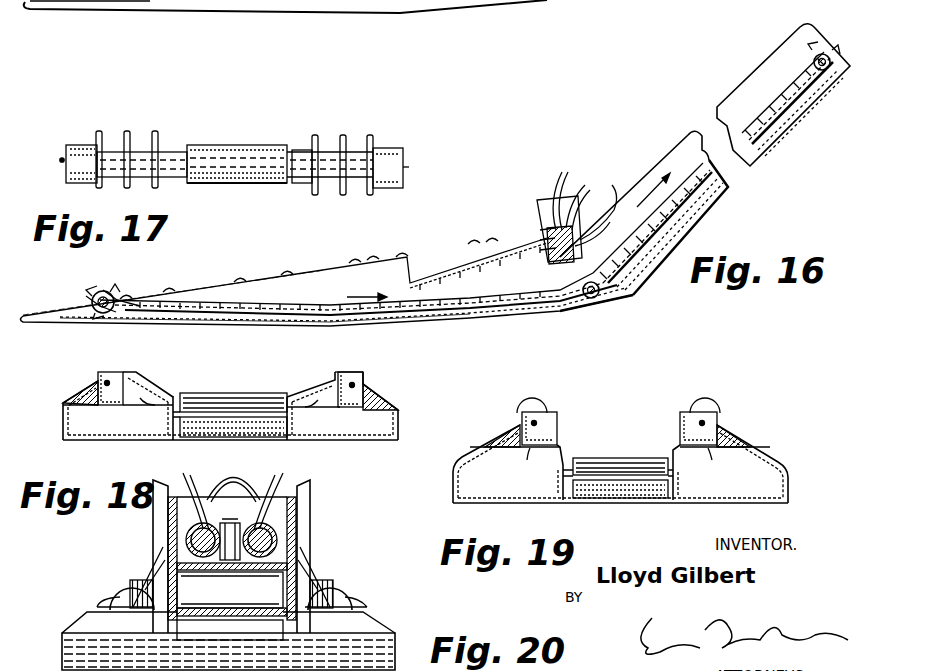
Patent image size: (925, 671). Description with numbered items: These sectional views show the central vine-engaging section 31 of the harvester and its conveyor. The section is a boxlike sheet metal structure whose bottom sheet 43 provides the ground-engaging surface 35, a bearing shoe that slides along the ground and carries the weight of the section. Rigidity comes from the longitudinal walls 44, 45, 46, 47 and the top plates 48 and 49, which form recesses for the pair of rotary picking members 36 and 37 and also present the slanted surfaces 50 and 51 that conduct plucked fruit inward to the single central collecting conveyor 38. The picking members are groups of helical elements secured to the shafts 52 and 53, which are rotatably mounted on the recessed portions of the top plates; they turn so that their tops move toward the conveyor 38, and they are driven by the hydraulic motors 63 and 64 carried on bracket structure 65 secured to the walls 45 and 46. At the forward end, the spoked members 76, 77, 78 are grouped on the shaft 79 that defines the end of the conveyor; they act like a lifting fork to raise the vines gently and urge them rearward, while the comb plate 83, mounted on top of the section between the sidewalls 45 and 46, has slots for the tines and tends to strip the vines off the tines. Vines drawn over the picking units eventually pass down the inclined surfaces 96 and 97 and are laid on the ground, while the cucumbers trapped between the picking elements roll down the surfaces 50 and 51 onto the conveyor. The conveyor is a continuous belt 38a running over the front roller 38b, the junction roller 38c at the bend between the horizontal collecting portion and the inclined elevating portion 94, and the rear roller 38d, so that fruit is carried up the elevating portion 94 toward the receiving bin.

In FIG. 16, the central section 31 is at (566, 312).
In FIG. 16, the ground-engaging surface 35 is at (285, 328).
In FIG. 18, the rotary picking member 36 is at (362, 371).
In FIG. 19, the rotary picking member 36 is at (719, 407).
In FIG. 20, the rotary picking member 36 is at (330, 586).
In FIG. 18, the rotary picking member 37 is at (123, 368).
In FIG. 19, the rotary picking member 37 is at (523, 410).
In FIG. 20, the rotary picking member 37 is at (120, 584).
In FIG. 16, the central collecting conveyor 38 is at (238, 295).
In FIG. 17, the central collecting conveyor 38 is at (244, 146).
In FIG. 18, the central collecting conveyor 38 is at (229, 395).
In FIG. 19, the central collecting conveyor 38 is at (620, 458).
In FIG. 20, the central collecting conveyor 38 is at (206, 574).
In FIG. 16, the continuous belt 38a is at (453, 300).
In FIG. 16, the front roller 38b is at (104, 291).
In FIG. 16, the junction roller 38c is at (605, 296).
In FIG. 16, the rear roller 38d is at (822, 54).
In FIG. 16, the bottom sheet 43 is at (418, 325).
In FIG. 17, the bottom sheet 43 is at (258, 188).
In FIG. 18, the bottom sheet 43 is at (325, 443).
In FIG. 19, the bottom sheet 43 is at (630, 505).
In FIG. 18, the longitudinal wall 44 is at (392, 428).
In FIG. 19, the longitudinal wall 44 is at (788, 487).
In FIG. 16, the longitudinal wall 45 is at (325, 270).
In FIG. 18, the longitudinal wall 45 is at (287, 428).
In FIG. 19, the longitudinal wall 45 is at (675, 487).
In FIG. 20, the longitudinal wall 45 is at (293, 545).
In FIG. 18, the longitudinal wall 46 is at (178, 428).
In FIG. 19, the longitudinal wall 46 is at (558, 487).
In FIG. 20, the longitudinal wall 46 is at (170, 552).
In FIG. 18, the longitudinal wall 47 is at (72, 428).
In FIG. 19, the longitudinal wall 47 is at (453, 487).
In FIG. 18, the top plate 48 is at (317, 403).
In FIG. 19, the top plate 48 is at (710, 450).
In FIG. 18, the top plate 49 is at (140, 400).
In FIG. 19, the top plate 49 is at (528, 450).
In FIG. 18, the slanted surface 50 is at (318, 390).
In FIG. 18, the slanted surface 51 is at (150, 385).
In FIG. 18, the shaft 52 is at (357, 385).
In FIG. 18, the shaft 53 is at (104, 380).
In FIG. 20, the hydraulic motor 63 is at (177, 522).
In FIG. 16, the hydraulic motor 64 is at (595, 205).
In FIG. 20, the hydraulic motor 64 is at (287, 527).
In FIG. 16, the bracket structure 65 is at (560, 263).
In FIG. 17, the spoked member 76 is at (155, 132).
In FIG. 17, the spoked member 77 is at (127, 132).
In FIG. 17, the spoked member 78 is at (99, 133).
In FIG. 16, the shaft 79 is at (100, 308).
In FIG. 17, the shaft 79 is at (62, 160).
In FIG. 17, the comb plate 83 is at (82, 147).
In FIG. 16, the inclined elevating portion 94 is at (776, 84).
In FIG. 20, the inclined surface 96 is at (375, 625).
In FIG. 20, the inclined surface 97 is at (85, 614).